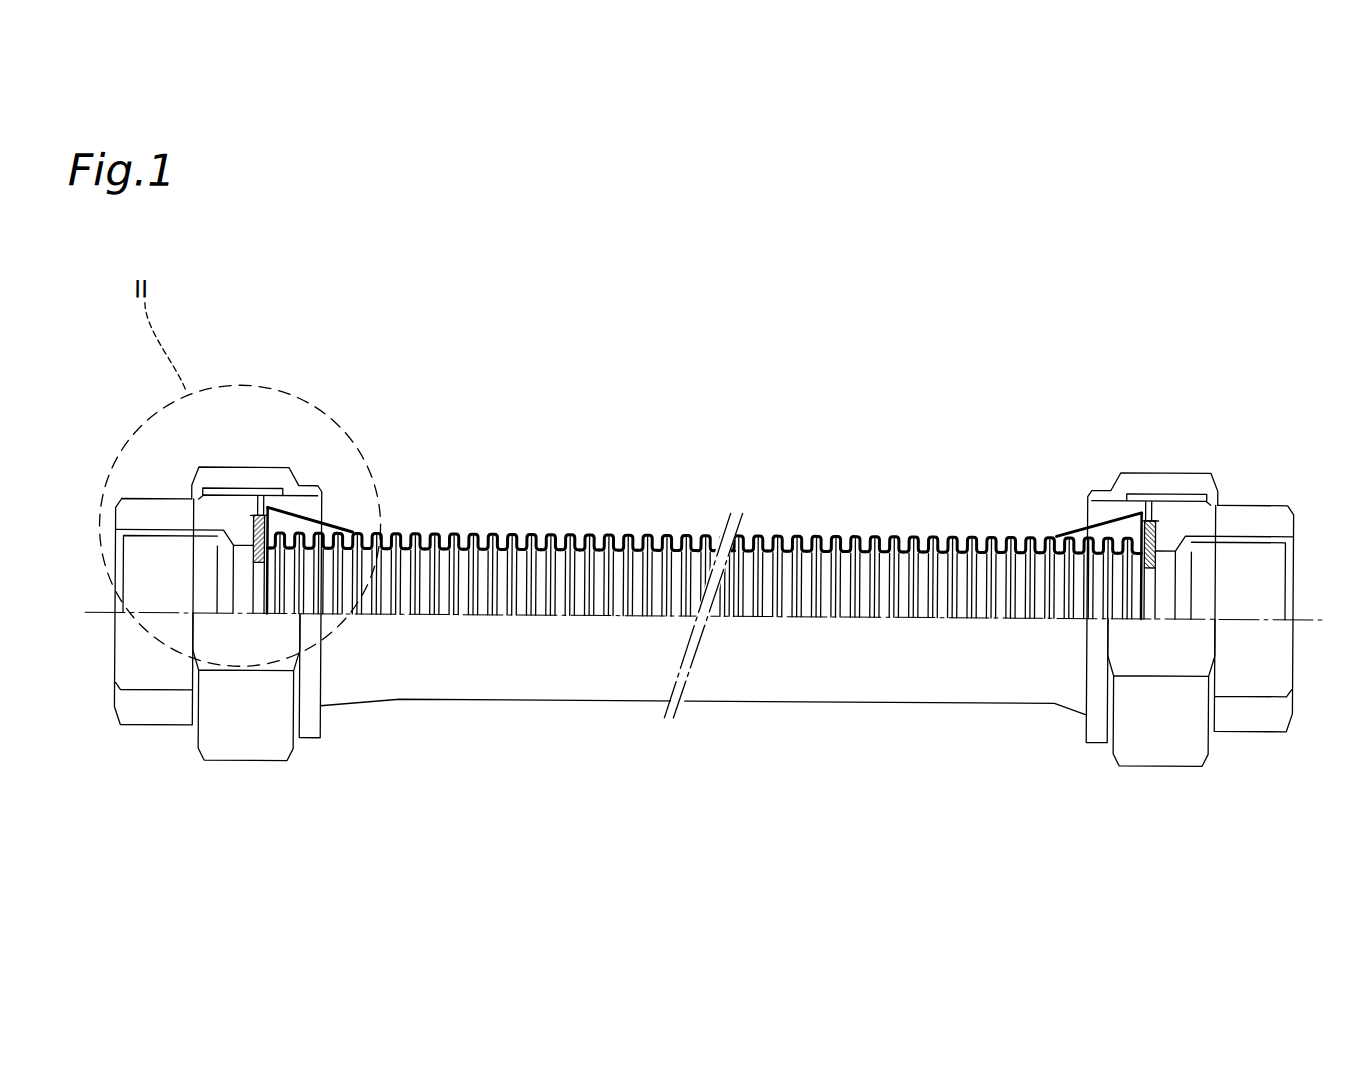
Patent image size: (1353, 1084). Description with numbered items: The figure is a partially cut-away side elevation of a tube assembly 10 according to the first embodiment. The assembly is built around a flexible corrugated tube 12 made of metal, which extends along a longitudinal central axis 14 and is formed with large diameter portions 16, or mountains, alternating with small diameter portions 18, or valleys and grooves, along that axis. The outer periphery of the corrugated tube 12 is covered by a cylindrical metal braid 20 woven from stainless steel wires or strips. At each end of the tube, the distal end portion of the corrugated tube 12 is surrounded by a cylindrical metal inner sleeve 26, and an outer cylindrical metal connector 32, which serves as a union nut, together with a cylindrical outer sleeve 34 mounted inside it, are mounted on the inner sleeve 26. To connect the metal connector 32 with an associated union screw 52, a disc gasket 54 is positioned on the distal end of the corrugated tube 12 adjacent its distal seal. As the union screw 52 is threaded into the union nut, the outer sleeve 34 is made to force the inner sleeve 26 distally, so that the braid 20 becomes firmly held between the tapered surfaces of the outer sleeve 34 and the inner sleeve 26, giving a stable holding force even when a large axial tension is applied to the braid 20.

The tube assembly 10 is at (657, 518).
The corrugated tube 12 is at (810, 558).
The longitudinal central axis 14 is at (833, 621).
The large diameter portions 16 is at (588, 529).
The small diameter portions 18 is at (522, 540).
The metal braid 20 is at (907, 536).
The inner sleeve 26 is at (287, 524).
The metal connector 32 is at (291, 468).
The outer sleeve 34 is at (310, 486).
The union screw 52 is at (140, 514).
The disc gasket 54 is at (250, 556).